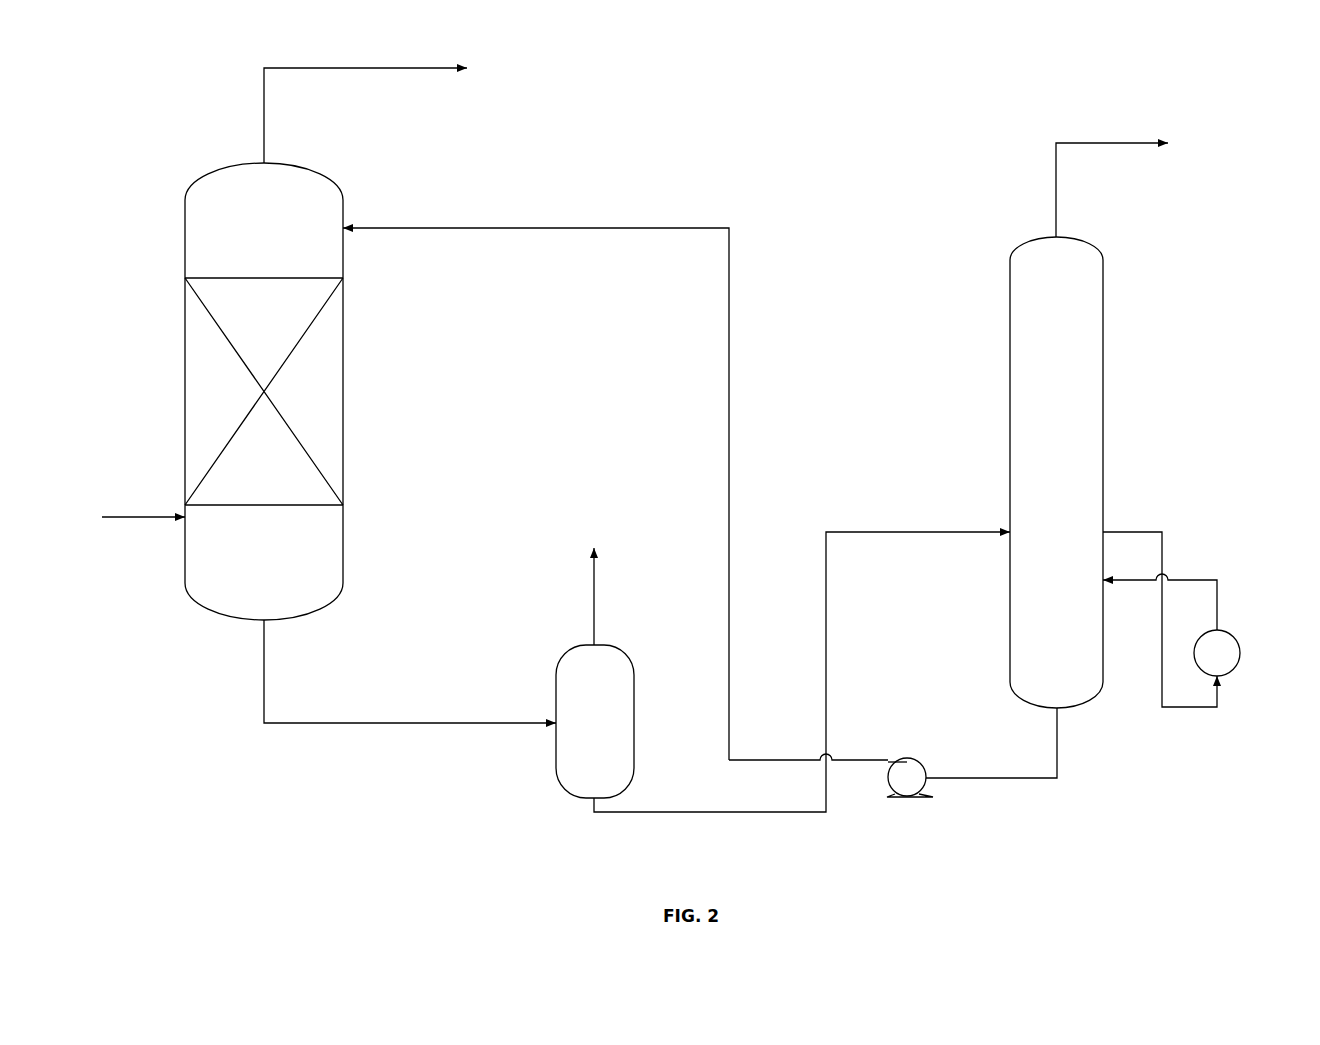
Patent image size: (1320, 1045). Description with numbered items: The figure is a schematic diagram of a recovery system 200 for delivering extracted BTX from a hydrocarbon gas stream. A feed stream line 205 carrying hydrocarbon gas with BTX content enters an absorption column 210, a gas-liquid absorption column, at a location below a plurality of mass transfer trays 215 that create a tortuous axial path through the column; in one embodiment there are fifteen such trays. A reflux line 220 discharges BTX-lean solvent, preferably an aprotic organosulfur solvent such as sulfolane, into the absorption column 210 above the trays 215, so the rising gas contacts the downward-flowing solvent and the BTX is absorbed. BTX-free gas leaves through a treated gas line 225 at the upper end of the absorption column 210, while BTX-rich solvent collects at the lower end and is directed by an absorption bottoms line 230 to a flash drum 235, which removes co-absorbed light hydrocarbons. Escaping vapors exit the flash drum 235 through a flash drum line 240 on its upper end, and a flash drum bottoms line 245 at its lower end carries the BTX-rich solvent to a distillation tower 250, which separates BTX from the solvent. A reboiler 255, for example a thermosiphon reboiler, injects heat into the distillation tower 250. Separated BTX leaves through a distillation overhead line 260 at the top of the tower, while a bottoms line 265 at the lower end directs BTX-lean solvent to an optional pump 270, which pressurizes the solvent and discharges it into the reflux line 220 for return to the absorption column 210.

The recovery system 200 is at (751, 96).
The feed stream line 205 is at (123, 499).
The absorption column 210 is at (310, 391).
The trays 215 is at (214, 391).
The reflux line 220 is at (615, 470).
The treated gas line 225 is at (365, 90).
The absorption bottoms line 230 is at (410, 671).
The flash drum 235 is at (546, 724).
The flash drum line 240 is at (544, 596).
The flash drum bottoms line 245 is at (802, 692).
The distillation tower 250 is at (1104, 472).
The reboiler 255 is at (1211, 619).
The distillation overhead line 260 is at (1090, 172).
The bottoms line 265 is at (1026, 768).
The pump 270 is at (949, 803).